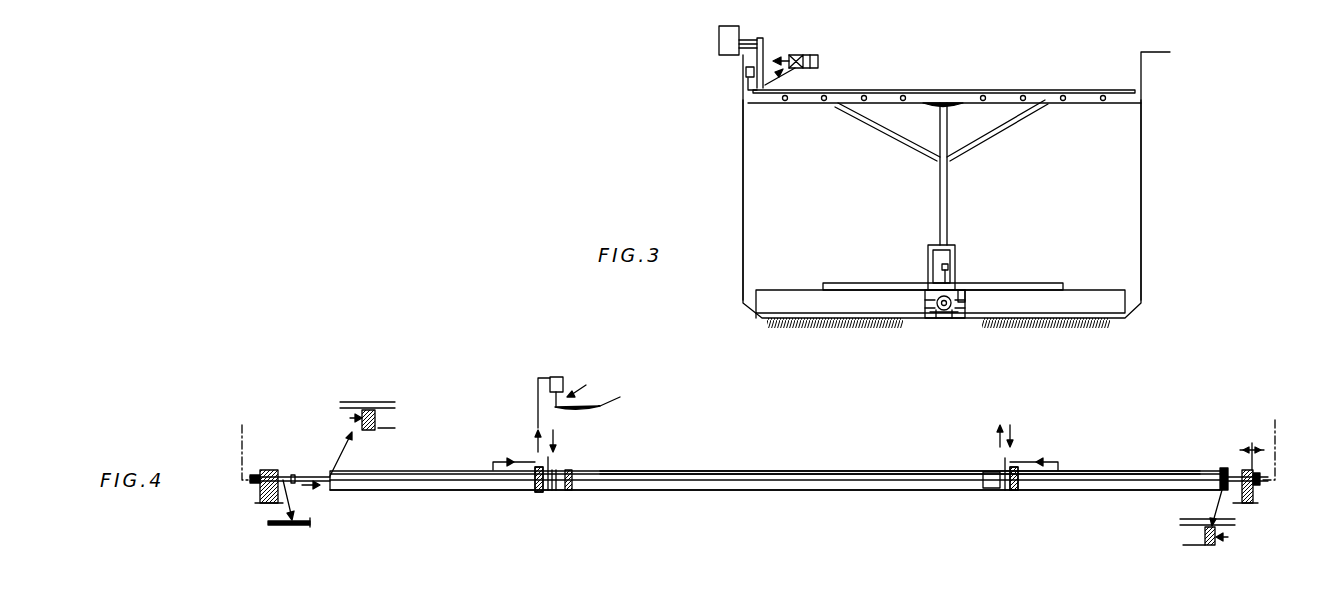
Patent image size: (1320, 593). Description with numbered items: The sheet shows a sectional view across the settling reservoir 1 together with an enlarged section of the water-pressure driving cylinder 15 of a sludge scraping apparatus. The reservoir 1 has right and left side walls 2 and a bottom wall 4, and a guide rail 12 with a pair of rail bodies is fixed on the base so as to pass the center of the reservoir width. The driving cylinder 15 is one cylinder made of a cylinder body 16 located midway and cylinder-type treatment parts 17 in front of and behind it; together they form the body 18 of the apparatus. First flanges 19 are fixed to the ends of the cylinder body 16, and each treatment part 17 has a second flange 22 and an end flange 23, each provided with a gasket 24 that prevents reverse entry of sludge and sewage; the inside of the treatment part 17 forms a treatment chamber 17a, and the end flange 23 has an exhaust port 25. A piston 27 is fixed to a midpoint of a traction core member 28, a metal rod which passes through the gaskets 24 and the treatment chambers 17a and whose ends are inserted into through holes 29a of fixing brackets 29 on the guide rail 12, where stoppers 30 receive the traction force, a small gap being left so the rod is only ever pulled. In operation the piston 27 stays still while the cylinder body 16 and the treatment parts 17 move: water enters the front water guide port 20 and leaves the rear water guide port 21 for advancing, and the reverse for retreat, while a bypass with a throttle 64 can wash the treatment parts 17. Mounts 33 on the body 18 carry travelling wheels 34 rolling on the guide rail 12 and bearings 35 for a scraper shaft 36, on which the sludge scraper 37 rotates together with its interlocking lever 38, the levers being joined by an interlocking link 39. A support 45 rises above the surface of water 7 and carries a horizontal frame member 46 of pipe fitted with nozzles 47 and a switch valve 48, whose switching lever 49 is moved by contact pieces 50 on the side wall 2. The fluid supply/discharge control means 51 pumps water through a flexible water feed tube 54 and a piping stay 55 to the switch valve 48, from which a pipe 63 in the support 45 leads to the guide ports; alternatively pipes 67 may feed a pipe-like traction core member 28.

In FIG. 3, the rectangular settling reservoir 1 is at (1146, 141).
In FIG. 3, the side wall 2 is at (744, 177).
In FIG. 3, the bottom wall 4 is at (1092, 328).
In FIG. 3, the surface of water 7 is at (1128, 103).
In FIG. 4, the surface of water 7 is at (610, 405).
In FIG. 3, the guide rail 12 is at (962, 320).
In FIG. 4, the water-pressure driving cylinder 15 is at (907, 466).
In FIG. 4, the cylinder body 16 is at (868, 470).
In FIG. 3, the treatment part 17 is at (950, 320).
In FIG. 4, the treatment part 17 is at (410, 470).
In FIG. 4, the treatment chamber 17a is at (425, 490).
In FIG. 3, the body 18 is at (938, 320).
In FIG. 4, the body 18 is at (823, 464).
In FIG. 4, the first flange 19 is at (540, 493).
In FIG. 4, the front water guide port 20 is at (553, 466).
In FIG. 4, the rear water guide port 21 is at (1002, 462).
In FIG. 4, the second flange 22 is at (535, 488).
In FIG. 4, the end flange 23 is at (363, 430).
In FIG. 4, the gasket 24 is at (358, 400).
In FIG. 4, the exhaust port 25 is at (378, 422).
In FIG. 3, the piston 27 is at (944, 320).
In FIG. 4, the piston 27 is at (570, 478).
In FIG. 4, the traction core member 28 is at (380, 407).
In FIG. 4, the fixing bracket 29 is at (272, 470).
In FIG. 4, the through hole 29a is at (283, 478).
In FIG. 4, the stopper 30 is at (264, 484).
In FIG. 3, the mount 33 is at (930, 318).
In FIG. 3, the travelling wheel 34 is at (966, 297).
In FIG. 3, the bearing 35 is at (958, 285).
In FIG. 3, the scraper shaft 36 is at (1035, 288).
In FIG. 3, the sludge scraper 37 is at (1088, 296).
In FIG. 3, the interlocking lever 38 is at (944, 280).
In FIG. 3, the interlocking link 39 is at (942, 266).
In FIG. 3, the support 45 is at (948, 211).
In FIG. 3, the horizontal frame member 46 is at (952, 90).
In FIG. 4, the horizontal frame member 46 is at (572, 410).
In FIG. 3, the nozzle 47 is at (1022, 96).
In FIG. 4, the nozzle 47 is at (563, 385).
In FIG. 3, the switch valve 48 is at (818, 60).
In FIG. 4, the switch valve 48 is at (556, 378).
In FIG. 3, the switching lever 49 is at (748, 88).
In FIG. 3, the contact piece 50 is at (746, 72).
In FIG. 3, the fluid supply/discharge control means 51 is at (783, 58).
In FIG. 3, the flexible water feed tube 54 is at (719, 43).
In FIG. 3, the piping stay 55 is at (760, 40).
In FIG. 3, the pipe 63 is at (948, 131).
In FIG. 4, the pipe 63 is at (538, 408).
In FIG. 4, the throttle 64 is at (774, 447).
In FIG. 4, the pipe 67 is at (243, 428).